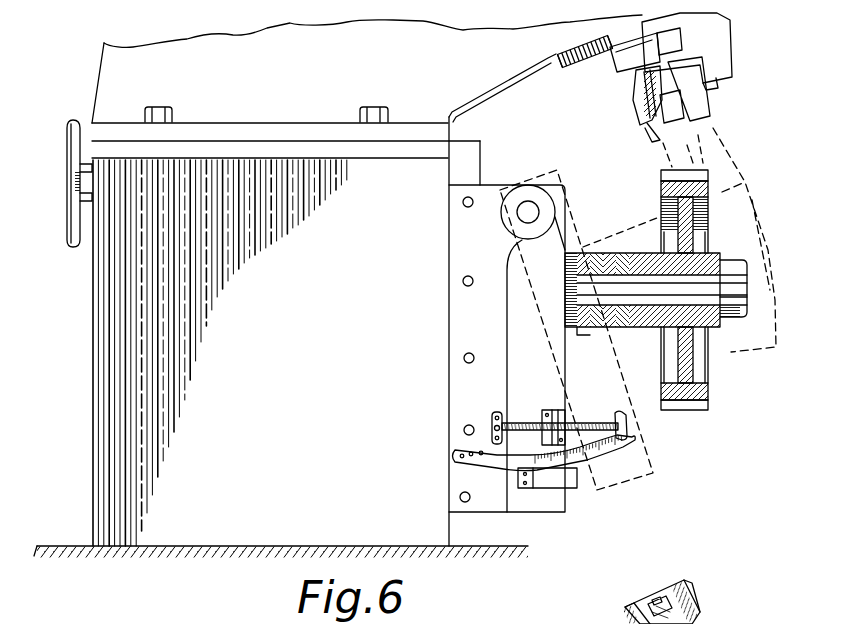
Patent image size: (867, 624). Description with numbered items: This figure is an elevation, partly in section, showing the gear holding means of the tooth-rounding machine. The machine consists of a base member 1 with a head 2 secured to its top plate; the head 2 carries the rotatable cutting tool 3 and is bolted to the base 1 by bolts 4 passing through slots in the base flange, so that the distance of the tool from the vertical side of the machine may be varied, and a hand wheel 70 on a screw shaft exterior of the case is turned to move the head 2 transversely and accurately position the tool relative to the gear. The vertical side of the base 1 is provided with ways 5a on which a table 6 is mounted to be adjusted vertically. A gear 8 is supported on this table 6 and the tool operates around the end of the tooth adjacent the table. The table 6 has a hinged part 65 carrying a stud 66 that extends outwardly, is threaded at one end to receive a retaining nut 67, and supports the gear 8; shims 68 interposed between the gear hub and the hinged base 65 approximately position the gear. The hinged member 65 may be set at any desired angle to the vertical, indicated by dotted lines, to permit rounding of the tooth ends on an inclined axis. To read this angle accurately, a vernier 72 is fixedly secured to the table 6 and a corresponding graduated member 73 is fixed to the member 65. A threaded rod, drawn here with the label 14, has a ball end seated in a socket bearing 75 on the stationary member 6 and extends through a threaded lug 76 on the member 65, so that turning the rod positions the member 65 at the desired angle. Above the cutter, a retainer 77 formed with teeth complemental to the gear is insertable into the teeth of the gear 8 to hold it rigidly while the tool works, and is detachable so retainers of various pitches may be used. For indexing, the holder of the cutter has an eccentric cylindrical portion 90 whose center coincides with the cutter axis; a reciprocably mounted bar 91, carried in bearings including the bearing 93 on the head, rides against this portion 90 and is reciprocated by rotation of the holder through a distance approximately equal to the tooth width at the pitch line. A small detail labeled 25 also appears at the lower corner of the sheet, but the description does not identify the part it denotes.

The base member 1 is at (220, 353).
The head 2 is at (367, 280).
The cutting tool 3 is at (643, 108).
The bolts 4 is at (382, 107).
The ways 5a is at (478, 152).
The table 6 is at (507, 348).
The gear 8 is at (713, 128).
The adjusting rod 14 is at (537, 398).
The bearing block 25 is at (667, 605).
The hinged part 65 is at (576, 330).
The stud 66 is at (656, 290).
The retaining nut 67 is at (725, 323).
The shims 68 is at (588, 330).
The hand wheel 70 is at (75, 118).
The vernier 72 is at (610, 458).
The graduated member 73 is at (557, 488).
The ball end and socket bearing 75 is at (493, 427).
The threaded lug 76 is at (555, 410).
The retainer 77 is at (702, 100).
The cylindrical portion 90 is at (612, 62).
The reciprocably mounted bar 91 is at (672, 40).
The bearing 93 is at (670, 24).